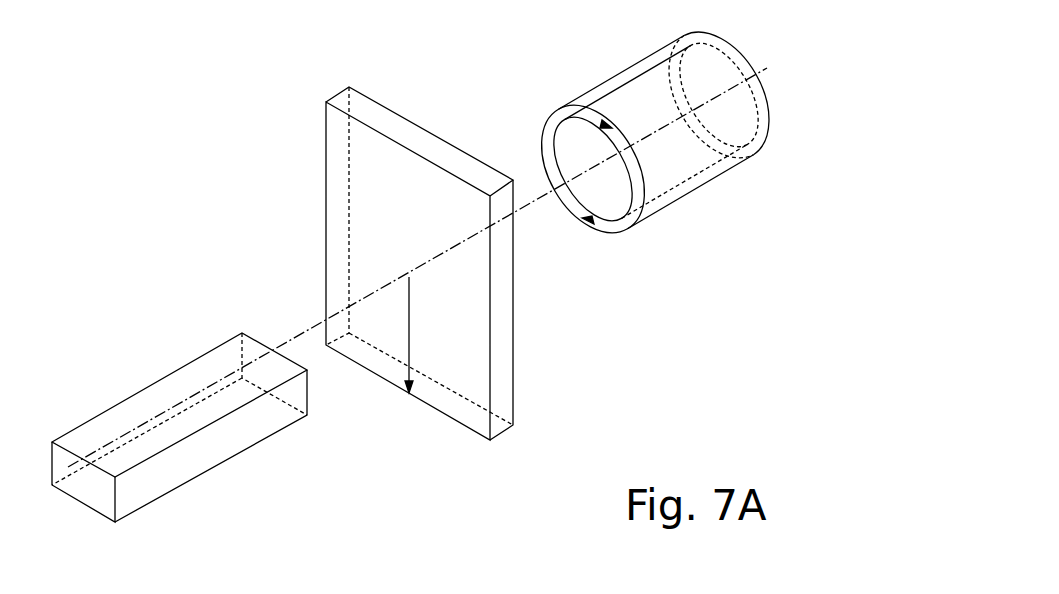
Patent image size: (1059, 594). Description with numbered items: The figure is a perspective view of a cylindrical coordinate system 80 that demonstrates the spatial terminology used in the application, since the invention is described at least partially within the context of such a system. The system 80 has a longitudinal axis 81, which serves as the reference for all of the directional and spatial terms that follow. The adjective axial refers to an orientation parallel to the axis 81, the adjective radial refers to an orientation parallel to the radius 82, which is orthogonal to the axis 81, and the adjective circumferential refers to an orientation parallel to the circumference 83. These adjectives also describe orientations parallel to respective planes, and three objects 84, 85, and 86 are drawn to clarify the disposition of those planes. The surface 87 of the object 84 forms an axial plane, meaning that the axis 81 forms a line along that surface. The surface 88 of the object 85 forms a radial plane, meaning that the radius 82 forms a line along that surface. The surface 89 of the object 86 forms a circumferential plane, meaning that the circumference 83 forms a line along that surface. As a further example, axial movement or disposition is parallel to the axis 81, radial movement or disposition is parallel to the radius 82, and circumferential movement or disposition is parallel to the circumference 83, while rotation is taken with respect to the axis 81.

The cylindrical coordinate system 80 is at (285, 145).
The longitudinal axis 81 is at (760, 72).
The radius 82 is at (409, 327).
The circumference 83 is at (540, 133).
The object 84 is at (142, 508).
The object 85 is at (522, 433).
The object 86 is at (687, 205).
The surface 87 is at (137, 408).
The surface 88 is at (340, 222).
The surface 89 is at (622, 70).